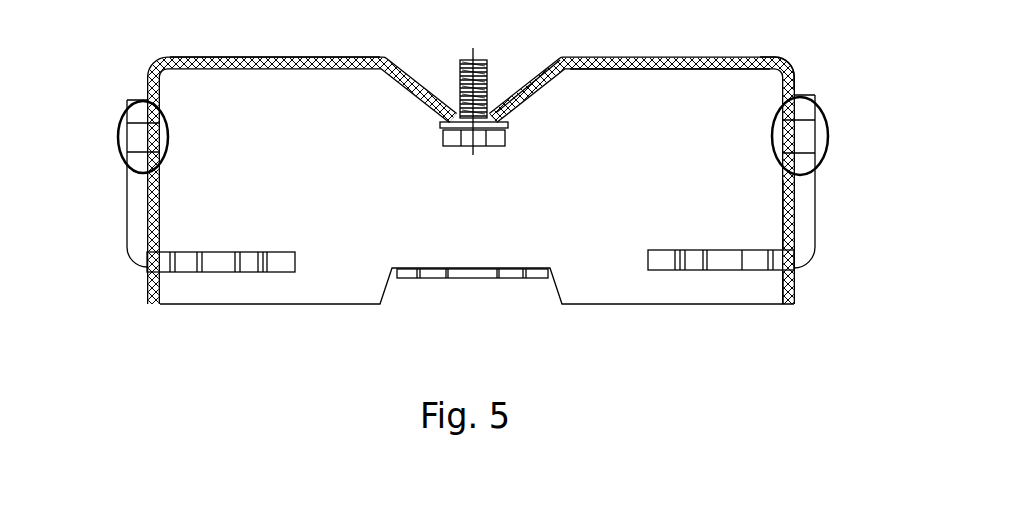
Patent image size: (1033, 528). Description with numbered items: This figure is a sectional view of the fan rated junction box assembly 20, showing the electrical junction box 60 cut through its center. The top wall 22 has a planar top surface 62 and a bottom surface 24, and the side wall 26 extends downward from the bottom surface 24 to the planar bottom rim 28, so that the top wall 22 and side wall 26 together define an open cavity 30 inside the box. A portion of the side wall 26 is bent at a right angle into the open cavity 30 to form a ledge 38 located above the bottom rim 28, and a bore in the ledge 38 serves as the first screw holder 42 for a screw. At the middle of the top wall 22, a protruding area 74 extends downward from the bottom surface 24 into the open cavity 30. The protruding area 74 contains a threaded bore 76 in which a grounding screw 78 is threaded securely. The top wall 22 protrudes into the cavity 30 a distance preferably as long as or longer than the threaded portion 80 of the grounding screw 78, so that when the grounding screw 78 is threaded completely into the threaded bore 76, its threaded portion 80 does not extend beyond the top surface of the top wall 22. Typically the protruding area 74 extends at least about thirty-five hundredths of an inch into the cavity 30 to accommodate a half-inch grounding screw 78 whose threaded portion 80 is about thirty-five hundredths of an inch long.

The fan rated junction box assembly 20 is at (848, 57).
The top wall 22 is at (660, 55).
The bottom surface 24 is at (697, 68).
The side wall 26 is at (783, 202).
The bottom rim 28 is at (785, 303).
The open cavity 30 is at (330, 265).
The ledge 38 is at (470, 268).
The first screw holder 42 is at (520, 278).
The electrical junction box 60 is at (752, 55).
The planar top surface 62 is at (217, 58).
The protruding area 74 is at (527, 87).
The threaded bore 76 is at (490, 110).
The grounding screw 78 is at (505, 147).
The threaded portion 80 is at (457, 92).